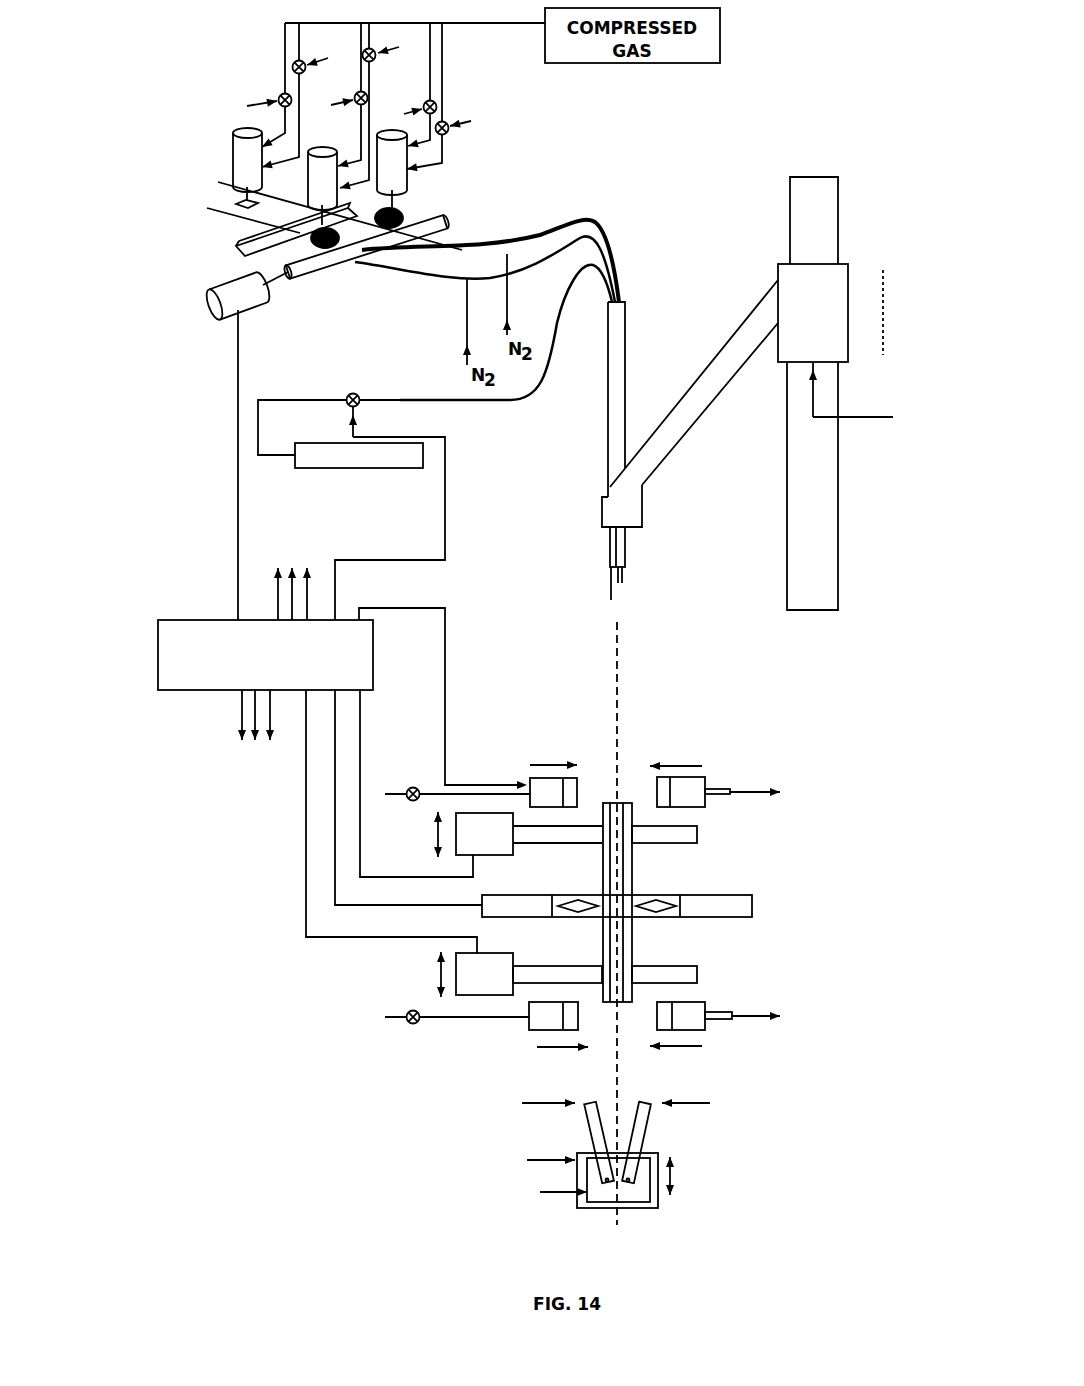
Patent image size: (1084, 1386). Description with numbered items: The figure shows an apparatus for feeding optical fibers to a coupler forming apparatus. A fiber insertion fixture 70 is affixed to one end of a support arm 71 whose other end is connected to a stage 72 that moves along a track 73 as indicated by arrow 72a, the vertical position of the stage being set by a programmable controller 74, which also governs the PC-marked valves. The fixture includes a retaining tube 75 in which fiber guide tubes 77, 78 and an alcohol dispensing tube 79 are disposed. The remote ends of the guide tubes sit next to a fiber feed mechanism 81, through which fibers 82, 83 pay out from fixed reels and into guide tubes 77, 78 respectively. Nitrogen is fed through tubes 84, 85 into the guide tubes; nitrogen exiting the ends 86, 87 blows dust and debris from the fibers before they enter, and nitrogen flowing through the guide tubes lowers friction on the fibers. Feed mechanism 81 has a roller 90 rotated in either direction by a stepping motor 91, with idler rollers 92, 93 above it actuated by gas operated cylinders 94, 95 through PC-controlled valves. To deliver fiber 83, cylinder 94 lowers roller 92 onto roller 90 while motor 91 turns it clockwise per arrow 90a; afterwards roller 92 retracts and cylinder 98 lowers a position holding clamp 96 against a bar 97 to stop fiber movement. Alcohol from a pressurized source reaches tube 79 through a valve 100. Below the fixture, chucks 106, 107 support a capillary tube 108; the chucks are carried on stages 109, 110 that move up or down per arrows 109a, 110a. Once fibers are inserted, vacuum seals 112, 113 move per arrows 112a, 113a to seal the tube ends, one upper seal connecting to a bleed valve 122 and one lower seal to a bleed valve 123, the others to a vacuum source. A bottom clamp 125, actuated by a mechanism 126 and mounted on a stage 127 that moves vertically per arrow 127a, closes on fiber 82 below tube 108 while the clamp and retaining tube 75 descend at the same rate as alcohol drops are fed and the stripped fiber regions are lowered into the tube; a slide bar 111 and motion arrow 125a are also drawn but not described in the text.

The fiber insertion fixture 70 is at (606, 550).
The support arm 71 is at (608, 503).
The stage 72 is at (793, 278).
The arrow 72a is at (883, 322).
The track 73 is at (795, 201).
The programmable controller 74 is at (158, 665).
The retaining tube 75 is at (610, 420).
The fiber guide tube 77 is at (560, 235).
The fiber guide tube 78 is at (545, 267).
The alcohol dispensing tube 79 is at (524, 400).
The fiber feed mechanism 81 is at (237, 72).
The fiber 82 is at (215, 181).
The fiber 83 is at (230, 222).
The nitrogen tube 84 is at (508, 285).
The nitrogen tube 85 is at (467, 322).
The end of guide tube 86 is at (462, 240).
The end of guide tube 87 is at (400, 270).
The roller 90 is at (342, 260).
The arrow 90a is at (458, 205).
The stepping motor 91 is at (238, 306).
The idler roller 92 is at (320, 252).
The idler roller 93 is at (400, 216).
The gas operated cylinder 94 is at (310, 193).
The gas operated cylinder 95 is at (408, 176).
The position holding clamp 96 is at (235, 204).
The bar 97 is at (237, 253).
The cylinder 98 is at (243, 163).
The valve 100 is at (360, 404).
The chuck 106 is at (695, 835).
The chuck 107 is at (670, 972).
The capillary tube 108 is at (632, 868).
The stage 109 is at (507, 850).
The arrow 109a is at (438, 834).
The stage 110 is at (500, 962).
The arrow 110a is at (438, 977).
The slide bar 111 is at (727, 912).
The vacuum seal 112 is at (538, 781).
The arrow 112a is at (545, 765).
The vacuum seal 113 is at (540, 1027).
The arrow 113a is at (680, 1046).
The bleed valve 122 is at (415, 787).
The bleed valve 123 is at (410, 1025).
The bottom clamp 125 is at (662, 1117).
The gripper arm motion 125a is at (693, 1103).
The mechanism 126 is at (643, 1192).
The stage 127 is at (650, 1158).
The arrow 127a is at (680, 1173).